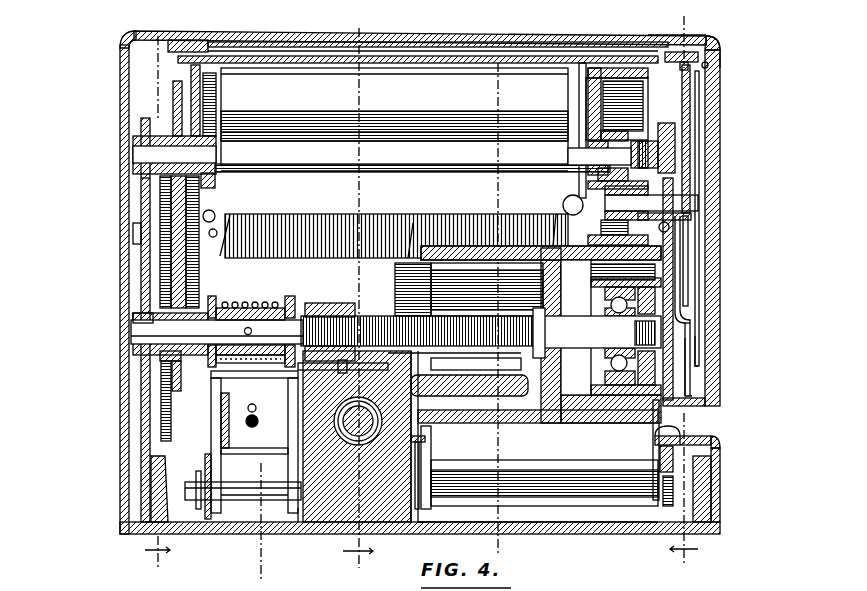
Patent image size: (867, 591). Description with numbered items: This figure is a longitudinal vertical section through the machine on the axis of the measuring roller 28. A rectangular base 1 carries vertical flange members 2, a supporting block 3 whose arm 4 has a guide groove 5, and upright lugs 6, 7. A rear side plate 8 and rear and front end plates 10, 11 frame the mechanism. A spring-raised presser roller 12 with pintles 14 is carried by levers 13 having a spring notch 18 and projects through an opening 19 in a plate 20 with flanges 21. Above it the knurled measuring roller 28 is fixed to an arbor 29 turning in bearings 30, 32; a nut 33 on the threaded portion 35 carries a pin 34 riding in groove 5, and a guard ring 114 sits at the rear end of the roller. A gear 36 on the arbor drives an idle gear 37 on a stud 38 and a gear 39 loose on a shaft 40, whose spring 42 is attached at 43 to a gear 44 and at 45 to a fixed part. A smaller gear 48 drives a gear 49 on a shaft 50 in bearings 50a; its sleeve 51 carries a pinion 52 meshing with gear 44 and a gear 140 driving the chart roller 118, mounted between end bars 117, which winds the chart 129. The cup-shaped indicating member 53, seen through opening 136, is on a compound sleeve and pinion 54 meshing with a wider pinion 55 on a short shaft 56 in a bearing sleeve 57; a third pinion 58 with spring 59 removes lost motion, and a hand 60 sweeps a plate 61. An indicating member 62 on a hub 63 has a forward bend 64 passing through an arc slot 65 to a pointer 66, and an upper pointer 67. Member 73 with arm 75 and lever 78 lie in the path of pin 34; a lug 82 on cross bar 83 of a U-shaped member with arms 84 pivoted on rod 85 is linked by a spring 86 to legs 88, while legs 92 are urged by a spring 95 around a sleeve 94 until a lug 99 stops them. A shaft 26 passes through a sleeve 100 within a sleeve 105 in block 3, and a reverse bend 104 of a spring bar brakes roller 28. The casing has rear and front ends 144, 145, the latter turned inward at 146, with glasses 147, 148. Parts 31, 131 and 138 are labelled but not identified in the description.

The base 1 is at (558, 522).
The vertical flange members 2 is at (152, 470).
The supporting block 3 is at (300, 514).
The forwardly extending arm 4 is at (487, 390).
The guide groove 5 is at (455, 416).
The upright lug 6 is at (685, 287).
The upright lug 7 is at (640, 133).
The rear side plate 8 is at (354, 432).
The rear end plate 10 is at (140, 412).
The front end plate 11 is at (665, 256).
The presser roller 12 is at (612, 498).
The levers 13 is at (643, 543).
The end pintles 14 is at (665, 452).
The notch 18 is at (152, 288).
The opening 19 is at (665, 428).
The plate 20 is at (690, 431).
The flanges 21 is at (712, 490).
The shaft 26 is at (338, 430).
The measuring roller 28 is at (540, 417).
The arbor 29 is at (292, 300).
The bearing 30 is at (618, 397).
The shaft 31 is at (660, 350).
The bearing 32 is at (128, 344).
The nut 33 is at (315, 295).
The pin 34 is at (330, 365).
The threaded portion 35 is at (364, 308).
The gear 36 is at (128, 318).
The idle gear 37 is at (165, 432).
The stud 38 is at (135, 394).
The gear 39 is at (160, 286).
The shaft 40 is at (340, 212).
The spring 42 is at (440, 236).
The spring attachment 43 is at (206, 210).
The gear 44 is at (195, 182).
The spring attachment 45 is at (555, 196).
The smaller gear 48 is at (157, 262).
The gear 49 is at (168, 85).
The shaft 50 is at (272, 165).
The bearings 50a is at (150, 160).
The sleeve 51 is at (136, 188).
The pinion 52 is at (213, 160).
The cup-shaped indicating member 53 is at (552, 150).
The compound sleeve and pinion 54 is at (580, 177).
The pinion 55 is at (560, 204).
The short shaft 56 is at (640, 232).
The bearing sleeve 57 is at (662, 222).
The third pinion 58 is at (598, 92).
The spring 59 is at (652, 140).
The indicating hand 60 is at (690, 142).
The plate 61 is at (673, 268).
The indicating member 62 is at (680, 290).
The hub 63 is at (672, 192).
The forward bend 64 is at (680, 326).
The arc-shaped slot 65 is at (683, 312).
The pointer 66 is at (690, 352).
The pointer 67 is at (703, 36).
The irregularly shaped member 73 is at (432, 418).
The short arm 75 is at (505, 390).
The lever 78 is at (272, 357).
The lug 82 is at (221, 406).
The cross bar 83 is at (215, 410).
The arms 84 is at (218, 470).
The rod 85 is at (240, 492).
The spring 86 is at (250, 420).
The legs 88 is at (191, 502).
The legs 92 is at (205, 360).
The sleeve 94 is at (262, 296).
The spring 95 is at (237, 293).
The lug 99 is at (480, 556).
The sleeve 100 is at (348, 432).
The reverse bend 104 is at (457, 471).
The sleeve 105 is at (378, 516).
The guard ring 114 is at (405, 214).
The end bars 117 is at (185, 62).
The hollow roller 118 is at (403, 130).
The chart 129 is at (193, 68).
The plate 131 is at (208, 50).
The opening 136 is at (660, 54).
The plate 138 is at (290, 41).
The gear 140 is at (213, 124).
The rear end 144 is at (128, 228).
The front end 145 is at (712, 66).
The inturned portion 146 is at (705, 399).
The glass 147 is at (692, 118).
The glass 148 is at (440, 36).